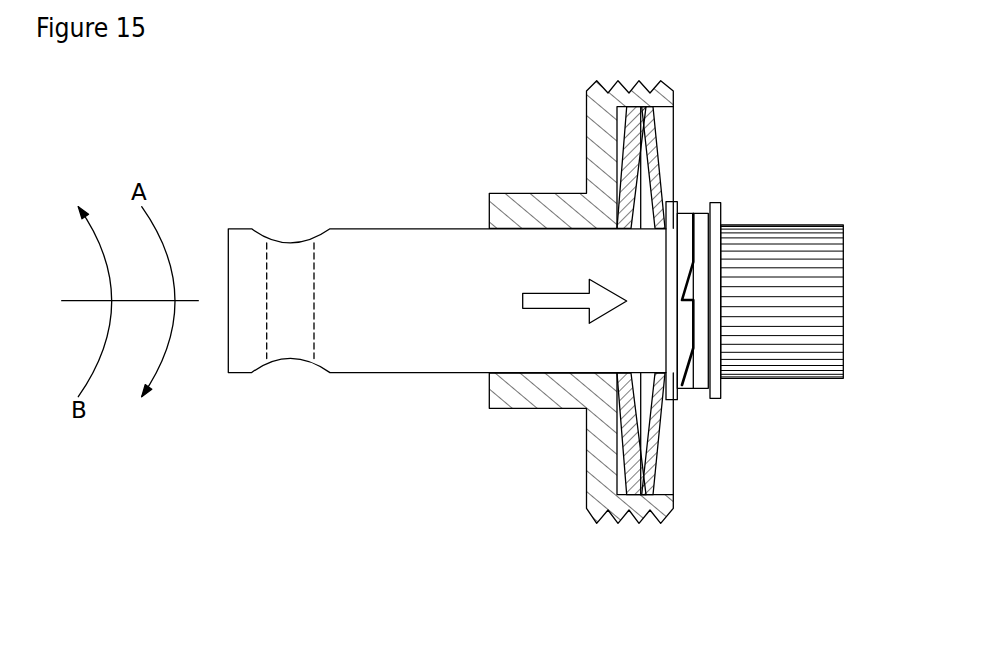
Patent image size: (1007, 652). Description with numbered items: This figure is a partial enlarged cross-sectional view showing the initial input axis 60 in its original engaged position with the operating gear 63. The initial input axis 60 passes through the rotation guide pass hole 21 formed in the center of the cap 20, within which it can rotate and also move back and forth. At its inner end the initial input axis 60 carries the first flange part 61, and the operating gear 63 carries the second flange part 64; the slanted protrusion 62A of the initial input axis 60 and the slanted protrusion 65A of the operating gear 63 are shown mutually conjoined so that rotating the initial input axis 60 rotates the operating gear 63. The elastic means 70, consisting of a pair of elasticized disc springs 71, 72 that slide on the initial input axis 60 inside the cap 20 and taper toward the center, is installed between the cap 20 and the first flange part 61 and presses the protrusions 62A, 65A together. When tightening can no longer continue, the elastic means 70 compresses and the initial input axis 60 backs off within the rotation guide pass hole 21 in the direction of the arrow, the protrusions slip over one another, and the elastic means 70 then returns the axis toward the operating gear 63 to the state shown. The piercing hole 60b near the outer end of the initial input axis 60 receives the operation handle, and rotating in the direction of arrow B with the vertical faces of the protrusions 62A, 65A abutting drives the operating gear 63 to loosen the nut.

The cap 20 is at (610, 417).
The rotation guide pass hole 21 is at (607, 378).
The initial input axis 60 is at (428, 257).
The piercing hole 60b is at (313, 301).
The first flange part 61 is at (675, 402).
The protrusion 62A is at (685, 300).
The protrusion 65A is at (685, 365).
The operating gear 63 is at (792, 355).
The second flange part 64 is at (715, 400).
The elastic means 70 is at (650, 364).
The disc spring 71 is at (635, 472).
The disc spring 72 is at (663, 493).